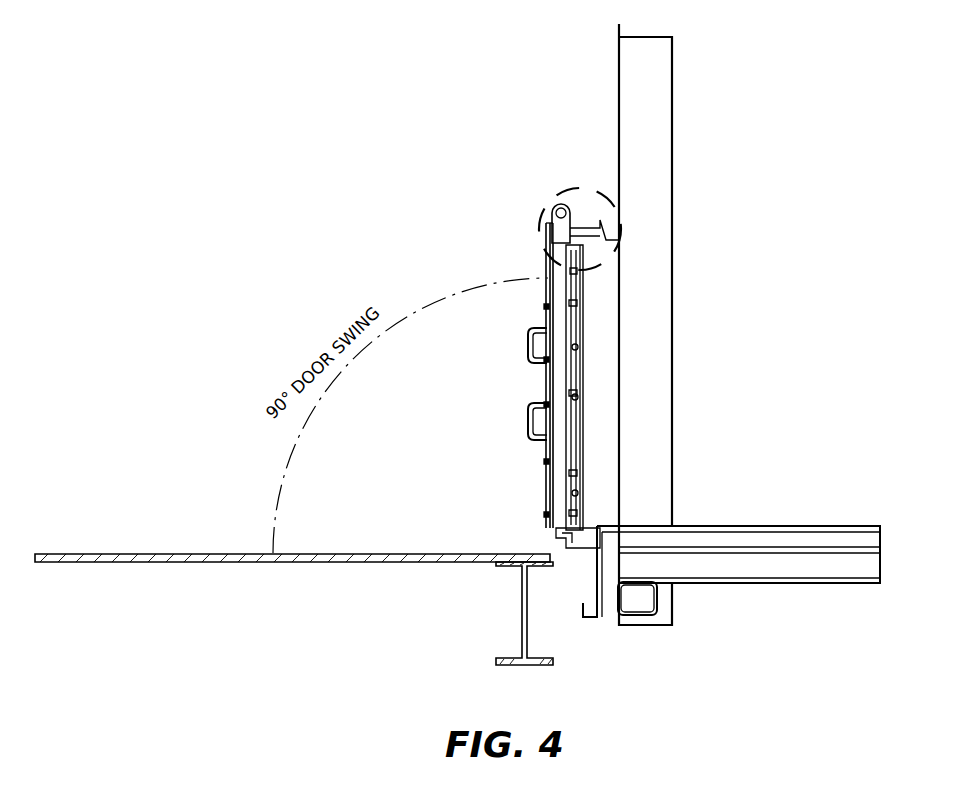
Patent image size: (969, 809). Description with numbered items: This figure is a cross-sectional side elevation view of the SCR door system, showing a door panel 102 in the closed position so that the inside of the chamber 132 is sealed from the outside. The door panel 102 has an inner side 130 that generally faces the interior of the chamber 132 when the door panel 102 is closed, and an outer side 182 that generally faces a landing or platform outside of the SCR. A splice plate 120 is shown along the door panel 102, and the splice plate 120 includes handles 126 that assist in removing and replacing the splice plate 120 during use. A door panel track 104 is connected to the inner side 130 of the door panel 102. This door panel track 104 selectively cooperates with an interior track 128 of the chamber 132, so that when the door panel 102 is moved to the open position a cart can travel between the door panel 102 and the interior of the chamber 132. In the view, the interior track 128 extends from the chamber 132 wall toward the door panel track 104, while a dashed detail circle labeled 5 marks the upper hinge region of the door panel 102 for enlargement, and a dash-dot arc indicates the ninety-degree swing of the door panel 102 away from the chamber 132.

The detail view indicator (FIG. 5) 5 is at (549, 197).
The door panel 102 is at (558, 470).
The door panel track 104 is at (580, 396).
The splice plate 120 is at (545, 287).
The handles 126 is at (528, 413).
The interior track 128 is at (694, 526).
The inner side 130 is at (575, 318).
The chamber 132 is at (790, 344).
The outer side 182 is at (545, 300).